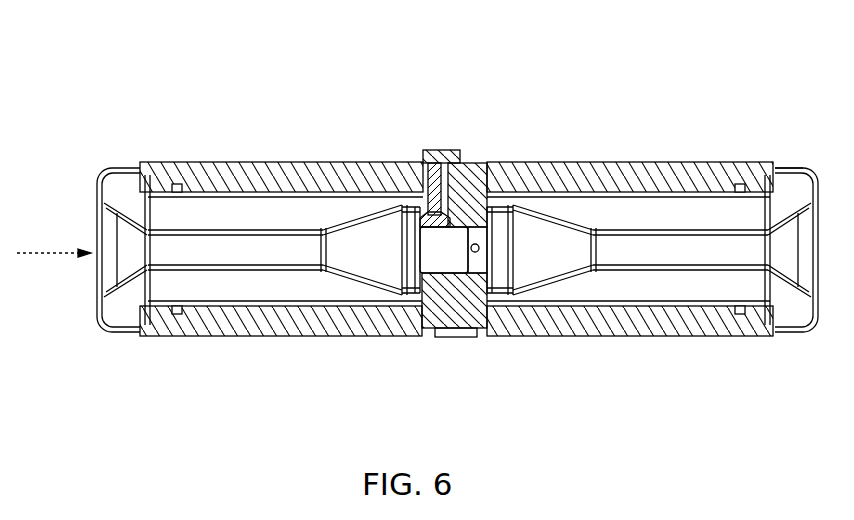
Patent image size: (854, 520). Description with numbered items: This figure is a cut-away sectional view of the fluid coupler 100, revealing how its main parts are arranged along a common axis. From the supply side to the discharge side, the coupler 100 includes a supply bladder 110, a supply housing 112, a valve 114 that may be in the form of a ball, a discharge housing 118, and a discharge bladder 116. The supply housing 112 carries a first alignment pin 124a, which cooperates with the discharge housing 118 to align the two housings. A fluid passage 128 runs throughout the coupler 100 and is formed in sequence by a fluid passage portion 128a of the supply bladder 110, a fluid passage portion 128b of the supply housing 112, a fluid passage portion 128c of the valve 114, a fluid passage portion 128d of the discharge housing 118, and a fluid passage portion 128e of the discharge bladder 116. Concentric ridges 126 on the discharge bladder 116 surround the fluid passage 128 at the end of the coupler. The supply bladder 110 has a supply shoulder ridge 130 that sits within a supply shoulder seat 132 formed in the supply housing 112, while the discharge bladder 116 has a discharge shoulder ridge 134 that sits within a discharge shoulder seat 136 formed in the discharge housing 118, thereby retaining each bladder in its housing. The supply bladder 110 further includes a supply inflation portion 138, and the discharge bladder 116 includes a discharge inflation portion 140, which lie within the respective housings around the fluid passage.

The coupler 100 is at (646, 102).
The supply bladder 110 is at (107, 330).
The supply housing 112 is at (290, 330).
The valve 114 is at (450, 148).
The discharge bladder 116 is at (782, 330).
The discharge housing 118 is at (597, 330).
The first alignment pin 124a is at (482, 242).
The concentric ridges 126 is at (92, 226).
The fluid passage 128 is at (50, 257).
The fluid passage portion of supply bladder 128a is at (203, 268).
The fluid passage portion of supply housing 128b is at (416, 265).
The fluid passage portion of valve 128c is at (448, 268).
The fluid passage portion of discharge housing 128d is at (497, 250).
The fluid passage portion of discharge bladder 128e is at (670, 242).
The supply shoulder ridge 130 is at (173, 163).
The supply shoulder seat 132 is at (230, 163).
The discharge shoulder ridge 134 is at (757, 314).
The discharge shoulder seat 136 is at (774, 162).
The supply inflation portion 138 is at (300, 213).
The discharge inflation portion 140 is at (680, 207).